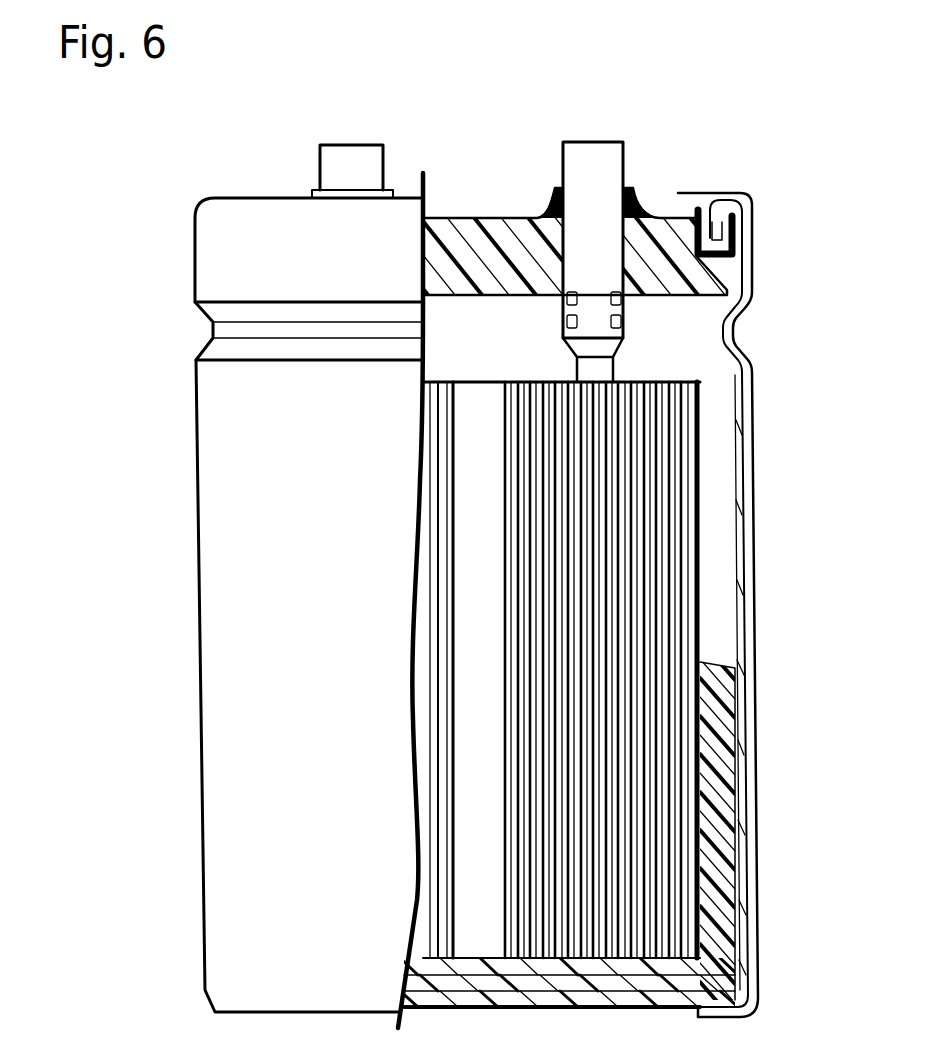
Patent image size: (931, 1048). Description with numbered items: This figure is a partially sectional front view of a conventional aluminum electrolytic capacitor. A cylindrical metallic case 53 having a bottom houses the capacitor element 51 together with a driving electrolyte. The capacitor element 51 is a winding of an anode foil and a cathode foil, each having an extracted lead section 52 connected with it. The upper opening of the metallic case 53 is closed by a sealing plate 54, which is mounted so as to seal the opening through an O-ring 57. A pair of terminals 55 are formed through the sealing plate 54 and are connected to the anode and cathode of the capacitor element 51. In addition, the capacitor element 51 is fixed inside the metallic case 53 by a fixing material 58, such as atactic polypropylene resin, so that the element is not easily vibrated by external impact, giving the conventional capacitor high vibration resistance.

The capacitor element 51 is at (690, 487).
The lead section 52 is at (578, 372).
The metallic case 53 is at (747, 950).
The sealing plate 54 is at (502, 225).
The terminal 55 is at (348, 150).
The O-ring 57 is at (723, 242).
The fixing material 58 is at (718, 792).